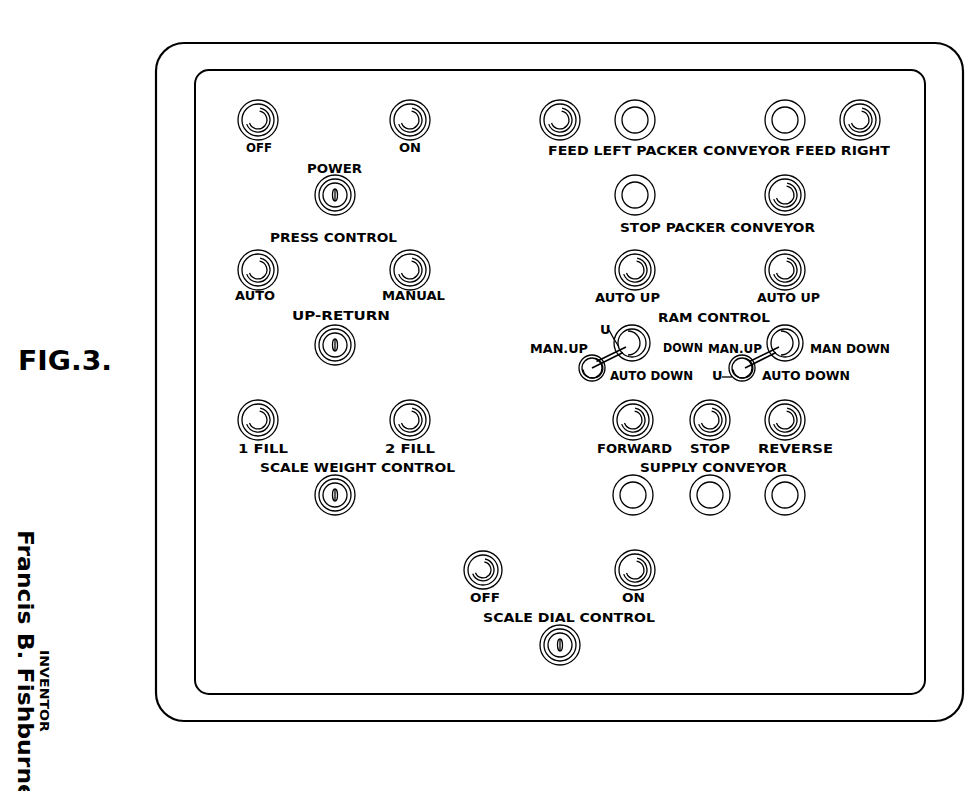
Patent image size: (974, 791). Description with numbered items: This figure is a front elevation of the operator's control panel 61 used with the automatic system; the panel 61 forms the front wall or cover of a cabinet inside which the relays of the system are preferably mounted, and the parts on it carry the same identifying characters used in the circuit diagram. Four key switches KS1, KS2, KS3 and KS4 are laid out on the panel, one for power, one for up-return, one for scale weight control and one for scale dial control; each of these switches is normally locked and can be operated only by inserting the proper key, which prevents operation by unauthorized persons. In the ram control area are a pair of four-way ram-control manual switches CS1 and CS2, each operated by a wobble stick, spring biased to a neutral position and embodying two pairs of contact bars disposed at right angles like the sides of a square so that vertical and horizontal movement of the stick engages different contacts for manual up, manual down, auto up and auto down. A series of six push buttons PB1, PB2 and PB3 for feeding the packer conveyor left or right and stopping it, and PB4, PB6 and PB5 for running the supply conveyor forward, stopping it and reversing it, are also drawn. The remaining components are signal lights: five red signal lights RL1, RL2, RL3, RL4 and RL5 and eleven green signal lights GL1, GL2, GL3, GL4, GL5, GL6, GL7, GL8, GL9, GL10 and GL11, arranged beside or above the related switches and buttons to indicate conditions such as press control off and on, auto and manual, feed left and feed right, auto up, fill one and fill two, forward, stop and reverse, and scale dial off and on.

The control panel 61 is at (167, 161).
The red signal light RL1 is at (258, 111).
The green signal light GL1 is at (410, 111).
The green signal light GL6 is at (560, 111).
The push button PB1 is at (635, 111).
The push button PB2 is at (785, 111).
The green signal light GL7 is at (860, 111).
The key switch KS1 is at (351, 195).
The push button PB3 is at (617, 195).
The red signal light RL4 is at (801, 195).
The green signal light GL2 is at (240, 270).
The green signal light GL3 is at (426, 270).
The green signal light GL8 is at (616, 270).
The green signal light GL11 is at (805, 270).
The key switch KS2 is at (335, 352).
The 4-way ram-control manual switch CS1 is at (633, 352).
The 4-way ram-control manual switch CS2 is at (785, 352).
The red signal light RL3 is at (258, 412).
The green signal light GL5 is at (410, 412).
The green signal light GL10 is at (650, 420).
The red signal light RL5 is at (725, 420).
The green signal light GL9 is at (801, 420).
The key switch KS4 is at (335, 502).
The push button PB4 is at (633, 504).
The push button PB6 is at (710, 504).
The push button PB5 is at (785, 504).
The red signal light RL2 is at (501, 570).
The green signal light GL4 is at (653, 570).
The key switch KS3 is at (560, 652).